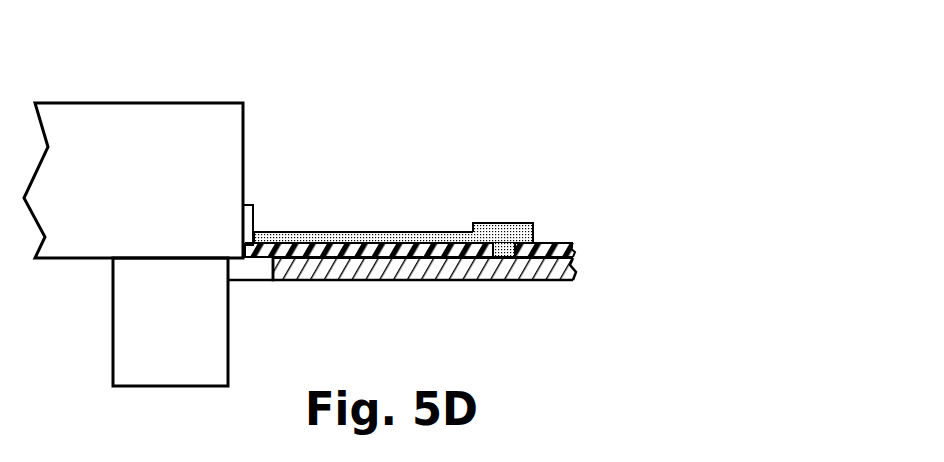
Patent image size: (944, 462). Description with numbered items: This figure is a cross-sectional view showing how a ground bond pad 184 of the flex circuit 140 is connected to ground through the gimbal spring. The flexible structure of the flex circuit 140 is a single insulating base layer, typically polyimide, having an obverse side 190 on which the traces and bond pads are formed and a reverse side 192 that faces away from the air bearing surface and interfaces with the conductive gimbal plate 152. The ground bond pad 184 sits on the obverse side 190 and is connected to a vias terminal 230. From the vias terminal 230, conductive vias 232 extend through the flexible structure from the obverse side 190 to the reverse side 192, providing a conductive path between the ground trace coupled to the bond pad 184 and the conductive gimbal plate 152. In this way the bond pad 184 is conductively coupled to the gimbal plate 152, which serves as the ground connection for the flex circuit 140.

The flex circuit 140 is at (559, 248).
The conductive gimbal plate 152 is at (573, 272).
The ground bond pad 184 is at (285, 232).
The obverse side 190 is at (383, 248).
The reverse side 192 is at (366, 281).
The vias terminal 230 is at (492, 223).
The conductive vias 232 is at (506, 257).